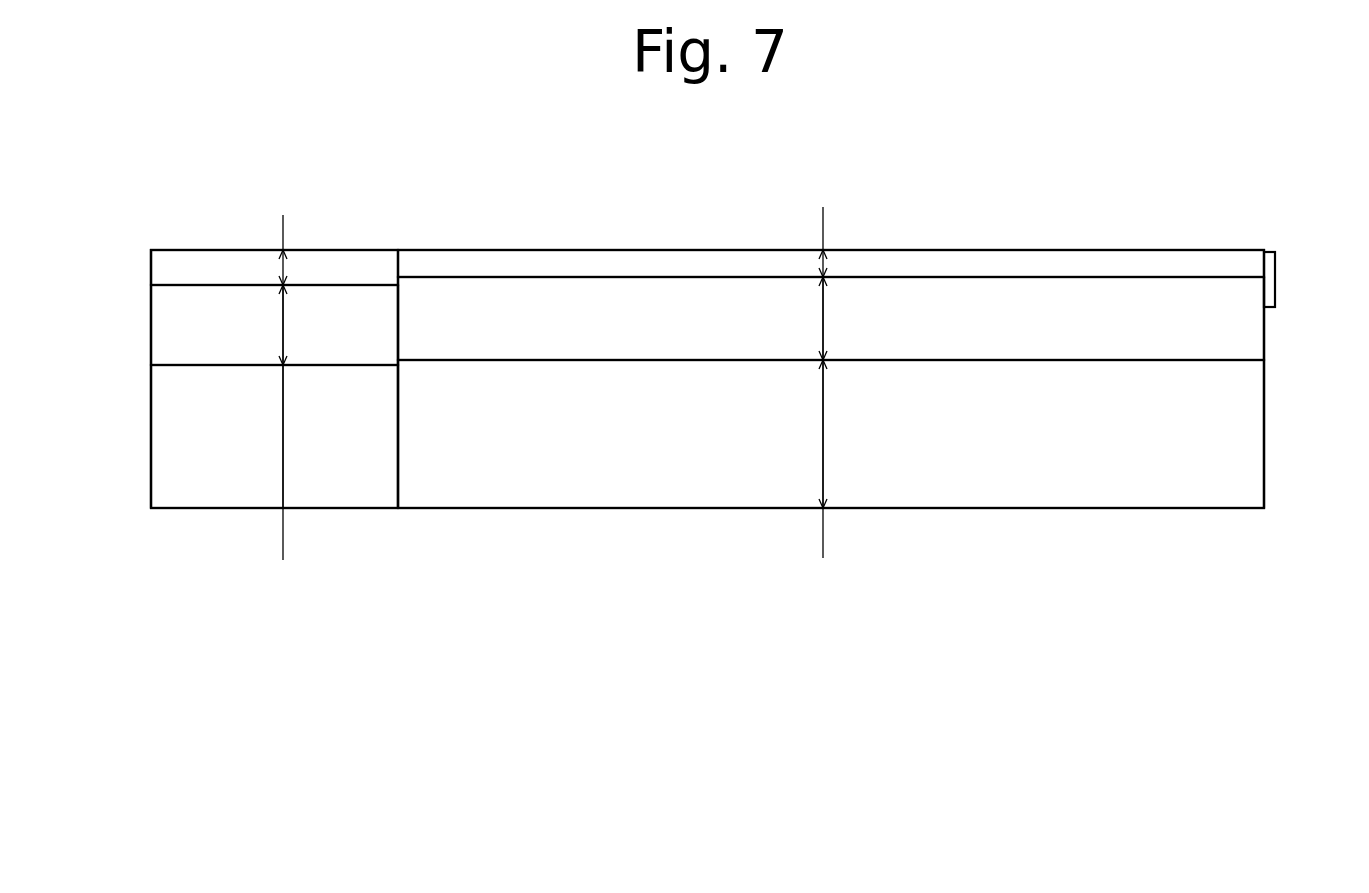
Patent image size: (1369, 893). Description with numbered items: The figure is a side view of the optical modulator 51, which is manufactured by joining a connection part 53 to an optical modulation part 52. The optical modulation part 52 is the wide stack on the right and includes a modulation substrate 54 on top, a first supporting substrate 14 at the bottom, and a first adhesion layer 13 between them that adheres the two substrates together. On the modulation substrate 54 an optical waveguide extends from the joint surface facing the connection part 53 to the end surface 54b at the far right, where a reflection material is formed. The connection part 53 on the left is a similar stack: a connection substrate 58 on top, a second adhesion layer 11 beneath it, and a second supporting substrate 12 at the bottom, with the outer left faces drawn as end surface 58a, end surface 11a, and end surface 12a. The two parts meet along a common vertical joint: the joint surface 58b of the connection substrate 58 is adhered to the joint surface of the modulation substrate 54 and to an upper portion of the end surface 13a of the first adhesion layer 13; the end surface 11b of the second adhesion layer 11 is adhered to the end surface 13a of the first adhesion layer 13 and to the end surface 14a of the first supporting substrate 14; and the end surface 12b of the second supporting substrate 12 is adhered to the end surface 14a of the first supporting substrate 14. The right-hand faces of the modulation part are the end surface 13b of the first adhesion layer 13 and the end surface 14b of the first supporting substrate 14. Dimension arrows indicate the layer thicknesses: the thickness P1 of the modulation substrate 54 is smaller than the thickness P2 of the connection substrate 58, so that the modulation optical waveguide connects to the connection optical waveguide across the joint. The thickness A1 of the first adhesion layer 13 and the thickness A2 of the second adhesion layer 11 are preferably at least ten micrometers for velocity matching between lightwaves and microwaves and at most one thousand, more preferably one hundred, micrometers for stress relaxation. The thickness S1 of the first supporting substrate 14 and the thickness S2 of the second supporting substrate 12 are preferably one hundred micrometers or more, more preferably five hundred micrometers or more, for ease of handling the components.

The optical modulator 51 is at (1162, 230).
The optical modulation part 52 is at (1022, 248).
The connection part 53 is at (201, 248).
The modulation substrate 54 is at (752, 265).
The end surface 54b is at (1273, 263).
The connection substrate 58 is at (234, 265).
The left end of thin layer 58a is at (150, 257).
The joint surface 58b is at (400, 260).
The second adhesion layer 11 is at (163, 347).
The left end face of first layer 11a is at (150, 313).
The end surface 11b is at (400, 317).
The second supporting substrate 12 is at (172, 457).
The left end face of second layer 12a is at (150, 410).
The end surface 12b is at (400, 405).
The first adhesion layer 13 is at (603, 297).
The end surface 13a is at (398, 342).
The right end face of third layer 13b is at (1264, 338).
The first supporting substrate 14 is at (567, 490).
The end surface 14a is at (398, 457).
The right end face of fourth layer 14b is at (781, 365).
The thickness of the modulation substrate P1 is at (830, 270).
The thickness of the connection substrate P2 is at (285, 272).
The thickness of the first adhesion layer A1 is at (824, 320).
The thickness of the second adhesion layer A2 is at (283, 333).
The thickness of the first supporting substrate S1 is at (823, 428).
The thickness of the second supporting substrate S2 is at (285, 447).